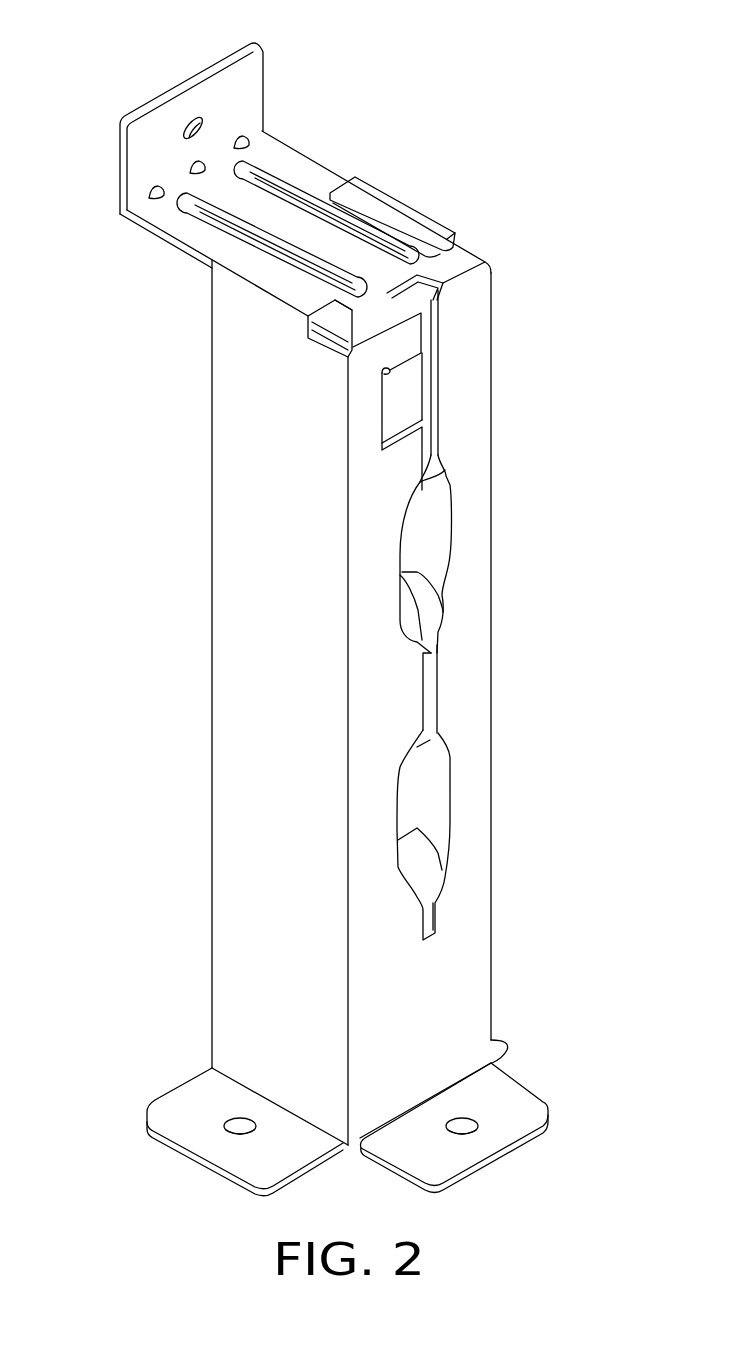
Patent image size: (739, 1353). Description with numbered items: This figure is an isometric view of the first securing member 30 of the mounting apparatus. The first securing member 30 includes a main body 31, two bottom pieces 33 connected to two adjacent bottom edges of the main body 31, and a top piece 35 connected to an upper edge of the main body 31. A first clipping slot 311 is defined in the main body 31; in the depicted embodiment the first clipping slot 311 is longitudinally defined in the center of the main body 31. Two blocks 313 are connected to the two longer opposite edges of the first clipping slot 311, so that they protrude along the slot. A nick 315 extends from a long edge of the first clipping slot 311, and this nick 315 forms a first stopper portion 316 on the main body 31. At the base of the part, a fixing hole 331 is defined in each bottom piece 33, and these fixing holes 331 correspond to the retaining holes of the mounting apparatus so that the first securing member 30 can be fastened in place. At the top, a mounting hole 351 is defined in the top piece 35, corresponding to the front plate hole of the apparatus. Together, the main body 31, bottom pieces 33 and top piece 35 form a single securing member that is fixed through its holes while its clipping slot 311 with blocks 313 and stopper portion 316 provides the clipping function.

The first securing member 30 is at (166, 45).
The main body 31 is at (275, 745).
The first clipping slot 311 is at (423, 618).
The blocks 313 is at (432, 532).
The nick 315 is at (397, 412).
The first stopper portion 316 is at (400, 367).
The bottom pieces 33 is at (182, 1107).
The fixing hole 331 is at (238, 1128).
The top piece 35 is at (245, 82).
The mounting hole 351 is at (184, 118).